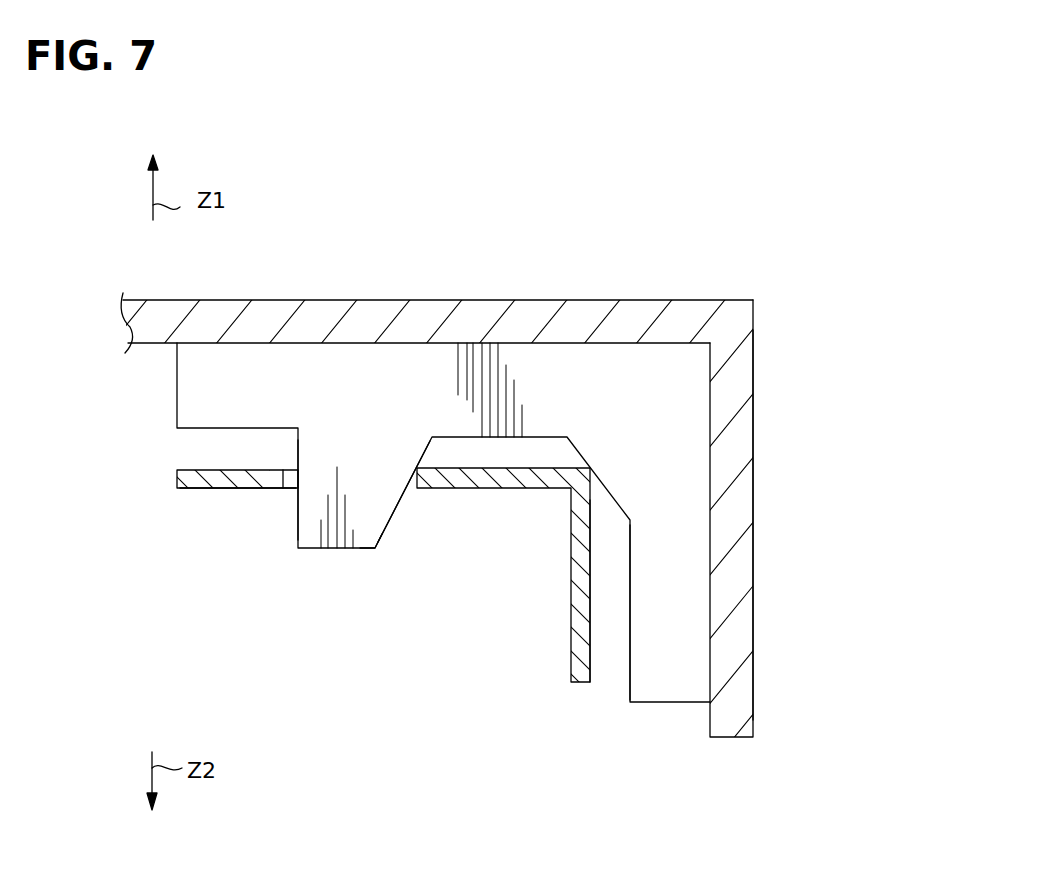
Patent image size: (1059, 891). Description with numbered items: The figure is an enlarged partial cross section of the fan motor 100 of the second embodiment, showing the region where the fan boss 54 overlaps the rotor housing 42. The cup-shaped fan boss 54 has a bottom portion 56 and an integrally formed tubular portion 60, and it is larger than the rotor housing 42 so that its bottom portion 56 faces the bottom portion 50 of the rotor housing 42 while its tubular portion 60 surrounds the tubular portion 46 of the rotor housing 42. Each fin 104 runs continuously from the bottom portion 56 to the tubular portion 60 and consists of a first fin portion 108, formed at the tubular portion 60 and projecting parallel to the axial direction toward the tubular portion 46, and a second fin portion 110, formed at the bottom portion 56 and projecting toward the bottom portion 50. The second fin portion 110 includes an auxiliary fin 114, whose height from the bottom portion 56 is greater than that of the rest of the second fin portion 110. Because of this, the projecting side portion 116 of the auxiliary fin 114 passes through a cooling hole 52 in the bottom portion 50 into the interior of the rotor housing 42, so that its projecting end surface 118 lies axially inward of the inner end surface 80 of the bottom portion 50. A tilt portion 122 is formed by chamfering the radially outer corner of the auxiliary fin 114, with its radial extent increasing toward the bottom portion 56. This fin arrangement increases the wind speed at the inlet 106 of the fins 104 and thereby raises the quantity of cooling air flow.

The fan motor 100 is at (398, 181).
The bottom portion 56 is at (548, 298).
The fan boss 54 is at (757, 380).
The tubular portion 60 is at (754, 475).
The tubular portion 46 is at (571, 632).
The rotor housing 42 is at (590, 662).
The bottom portion 50 is at (198, 468).
The cooling hole 52 is at (283, 470).
The inner end surface 80 is at (215, 489).
The inlet 106 is at (357, 380).
The fin 104 is at (482, 525).
The second fin portion 110 is at (530, 438).
The first fin portion 108 is at (630, 570).
The auxiliary fin 114 is at (298, 522).
The projecting side portion 116 is at (373, 549).
The projecting end surface 118 is at (312, 549).
The tilt portion 122 is at (393, 517).